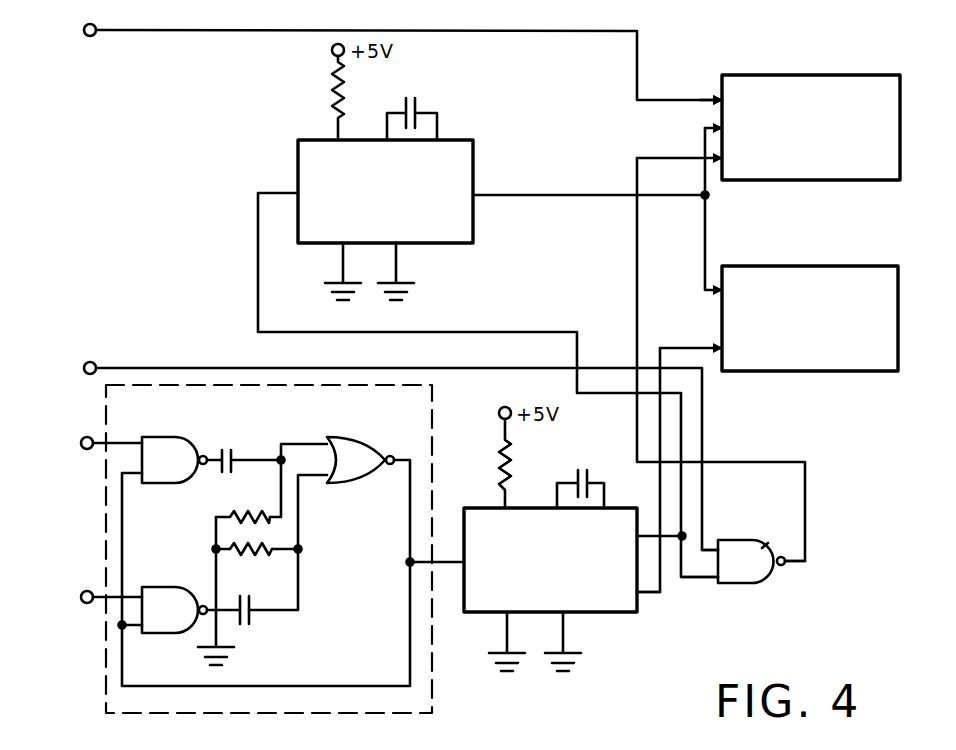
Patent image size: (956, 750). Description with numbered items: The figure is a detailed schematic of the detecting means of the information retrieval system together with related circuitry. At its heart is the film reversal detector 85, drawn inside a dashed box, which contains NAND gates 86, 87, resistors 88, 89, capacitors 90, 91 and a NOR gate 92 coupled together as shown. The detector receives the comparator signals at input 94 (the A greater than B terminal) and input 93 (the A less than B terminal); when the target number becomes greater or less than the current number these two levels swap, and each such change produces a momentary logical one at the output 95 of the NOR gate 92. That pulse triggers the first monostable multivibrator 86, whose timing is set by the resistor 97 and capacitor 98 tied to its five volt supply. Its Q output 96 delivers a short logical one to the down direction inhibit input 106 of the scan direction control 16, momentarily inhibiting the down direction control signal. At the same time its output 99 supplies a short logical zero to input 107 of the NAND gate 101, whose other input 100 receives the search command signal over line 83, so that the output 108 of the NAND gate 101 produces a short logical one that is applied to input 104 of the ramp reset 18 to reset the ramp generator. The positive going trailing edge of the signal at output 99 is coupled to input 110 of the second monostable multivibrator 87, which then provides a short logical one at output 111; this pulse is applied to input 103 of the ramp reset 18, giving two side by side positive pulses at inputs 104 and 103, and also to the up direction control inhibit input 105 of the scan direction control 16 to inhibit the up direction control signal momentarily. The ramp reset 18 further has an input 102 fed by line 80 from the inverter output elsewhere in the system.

The scan direction control 16 is at (778, 275).
The ramp reset 18 is at (788, 88).
The line 80 is at (210, 32).
The line 83 is at (192, 368).
The film reversal detector 85 is at (118, 404).
The first monostable multivibrator 86 is at (168, 447).
The second monostable multivibrator 87 is at (472, 213).
The resistor 88 is at (268, 512).
The resistor 89 is at (245, 553).
The capacitor 90 is at (236, 452).
The capacitor 91 is at (250, 600).
The NOR gate 92 is at (352, 450).
The input 93 is at (97, 592).
The input 94 is at (97, 437).
The output 95 is at (390, 455).
The Q output 96 is at (640, 598).
The resistor 97 is at (500, 478).
The capacitor 98 is at (577, 478).
The output 99 is at (646, 532).
The input 100 is at (716, 550).
The NAND gate 101 is at (762, 548).
The input 102 is at (716, 96).
The input 103 is at (716, 126).
The input 104 is at (718, 168).
The up direction control inhibit input 105 is at (716, 300).
The down direction inhibit input 106 is at (716, 346).
The input 107 is at (720, 580).
The output 108 is at (784, 566).
The input 110 is at (297, 192).
The output 111 is at (476, 194).